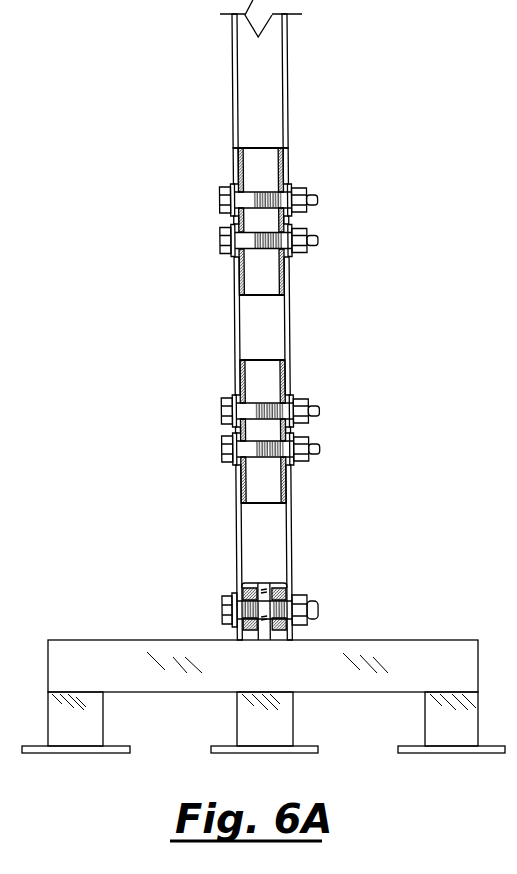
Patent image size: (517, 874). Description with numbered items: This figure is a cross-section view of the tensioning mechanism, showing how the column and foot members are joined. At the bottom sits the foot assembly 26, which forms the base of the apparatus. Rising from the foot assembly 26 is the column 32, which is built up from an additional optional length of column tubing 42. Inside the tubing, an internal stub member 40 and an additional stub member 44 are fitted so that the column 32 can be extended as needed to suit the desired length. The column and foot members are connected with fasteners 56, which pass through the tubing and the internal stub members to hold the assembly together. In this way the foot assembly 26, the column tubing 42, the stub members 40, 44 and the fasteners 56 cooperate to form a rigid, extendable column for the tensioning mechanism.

The foot assembly 26 is at (275, 684).
The column 32 is at (247, 72).
The internal stub member 40 is at (268, 378).
The column tubing 42 is at (288, 319).
The additional stub member 44 is at (262, 160).
The fastener 56 is at (222, 406).